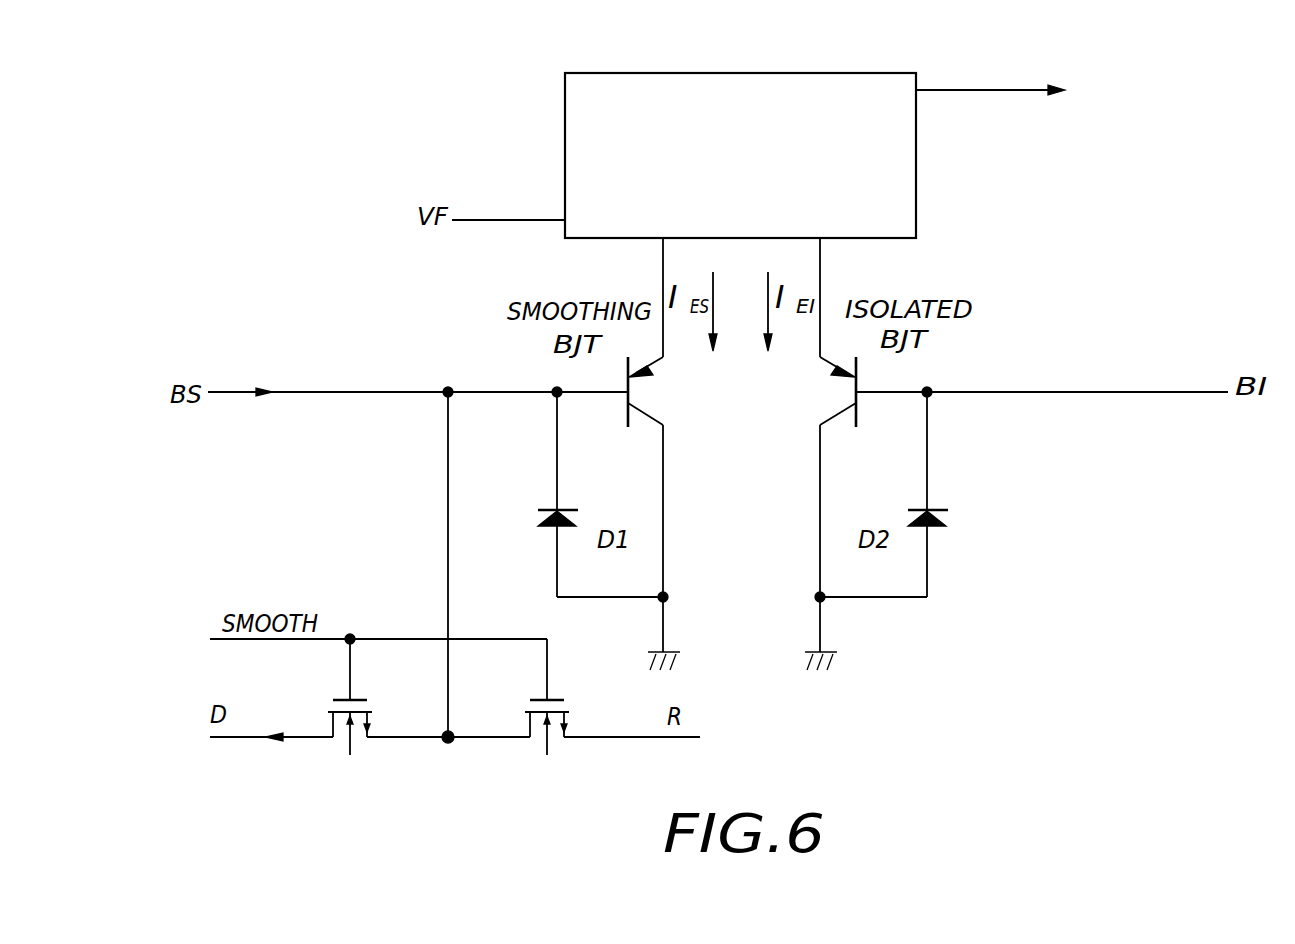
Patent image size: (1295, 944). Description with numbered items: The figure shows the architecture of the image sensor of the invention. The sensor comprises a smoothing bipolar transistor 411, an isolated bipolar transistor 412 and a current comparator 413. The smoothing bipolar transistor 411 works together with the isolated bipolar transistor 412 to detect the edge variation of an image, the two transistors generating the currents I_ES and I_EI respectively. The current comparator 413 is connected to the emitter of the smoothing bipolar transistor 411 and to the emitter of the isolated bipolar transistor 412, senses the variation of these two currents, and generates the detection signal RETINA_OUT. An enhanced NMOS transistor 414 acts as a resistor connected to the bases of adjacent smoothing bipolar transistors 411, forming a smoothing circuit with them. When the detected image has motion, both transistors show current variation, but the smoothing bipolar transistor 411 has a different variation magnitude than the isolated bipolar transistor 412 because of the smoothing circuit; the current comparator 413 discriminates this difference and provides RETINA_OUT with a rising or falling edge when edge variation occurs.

The smoothing bipolar transistor 411 is at (655, 406).
The isolated bipolar transistor 412 is at (833, 387).
The current comparator 413 is at (903, 92).
The enhanced NMOS transistor 414 is at (352, 698).